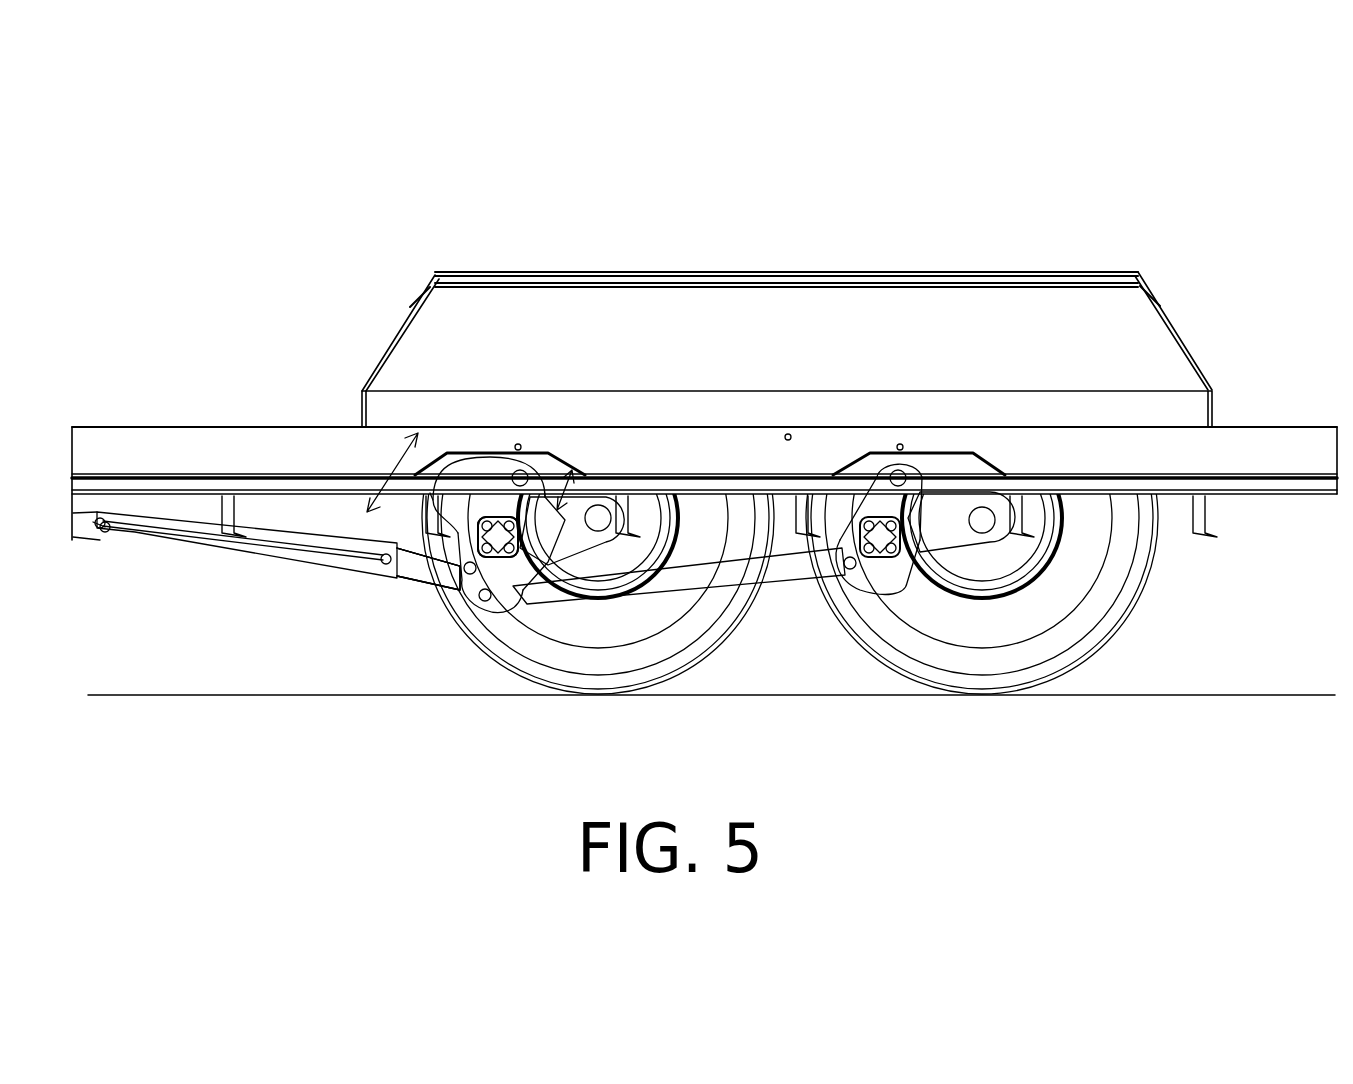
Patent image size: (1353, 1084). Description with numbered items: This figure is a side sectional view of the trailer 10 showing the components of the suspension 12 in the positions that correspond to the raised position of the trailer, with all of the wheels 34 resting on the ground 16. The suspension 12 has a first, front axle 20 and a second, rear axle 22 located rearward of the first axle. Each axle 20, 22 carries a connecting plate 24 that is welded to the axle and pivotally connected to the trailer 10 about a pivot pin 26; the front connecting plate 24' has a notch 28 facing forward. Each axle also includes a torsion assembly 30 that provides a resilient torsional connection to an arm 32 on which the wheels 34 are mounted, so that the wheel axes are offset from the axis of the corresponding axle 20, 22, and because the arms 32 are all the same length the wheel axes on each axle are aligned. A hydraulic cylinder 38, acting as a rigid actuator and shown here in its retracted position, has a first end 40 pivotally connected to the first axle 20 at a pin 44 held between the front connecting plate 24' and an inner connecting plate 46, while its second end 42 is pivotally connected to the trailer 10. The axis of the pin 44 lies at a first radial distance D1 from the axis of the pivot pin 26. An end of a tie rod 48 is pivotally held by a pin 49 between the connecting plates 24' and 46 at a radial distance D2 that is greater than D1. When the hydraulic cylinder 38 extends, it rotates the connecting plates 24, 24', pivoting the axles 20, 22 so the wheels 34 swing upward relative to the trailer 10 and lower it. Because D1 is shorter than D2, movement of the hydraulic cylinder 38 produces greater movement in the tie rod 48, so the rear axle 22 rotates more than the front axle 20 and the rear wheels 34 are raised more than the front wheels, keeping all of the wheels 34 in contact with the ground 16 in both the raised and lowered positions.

The trailer 10 is at (483, 220).
The suspension 12 is at (432, 643).
The ground 16 is at (160, 695).
The first, front axle 20 is at (428, 569).
The second, rear axle 22 is at (877, 590).
The connecting plate 24 is at (762, 635).
The front connecting plate 24' is at (498, 537).
The pivot pin 26 is at (866, 427).
The notch 28 is at (376, 478).
The torsion assembly 30 is at (470, 505).
The arm 32 is at (660, 500).
The wheels 34 is at (683, 672).
The hydraulic cylinder 38 is at (238, 555).
The first end 40 is at (445, 575).
The second end 42 is at (135, 540).
The pin 44 is at (428, 569).
The inner connecting plate 46 is at (507, 602).
The tie rod 48 is at (745, 600).
The pin 49 is at (485, 600).
The first radial distance D1 is at (418, 430).
The radial distance D2 is at (573, 468).